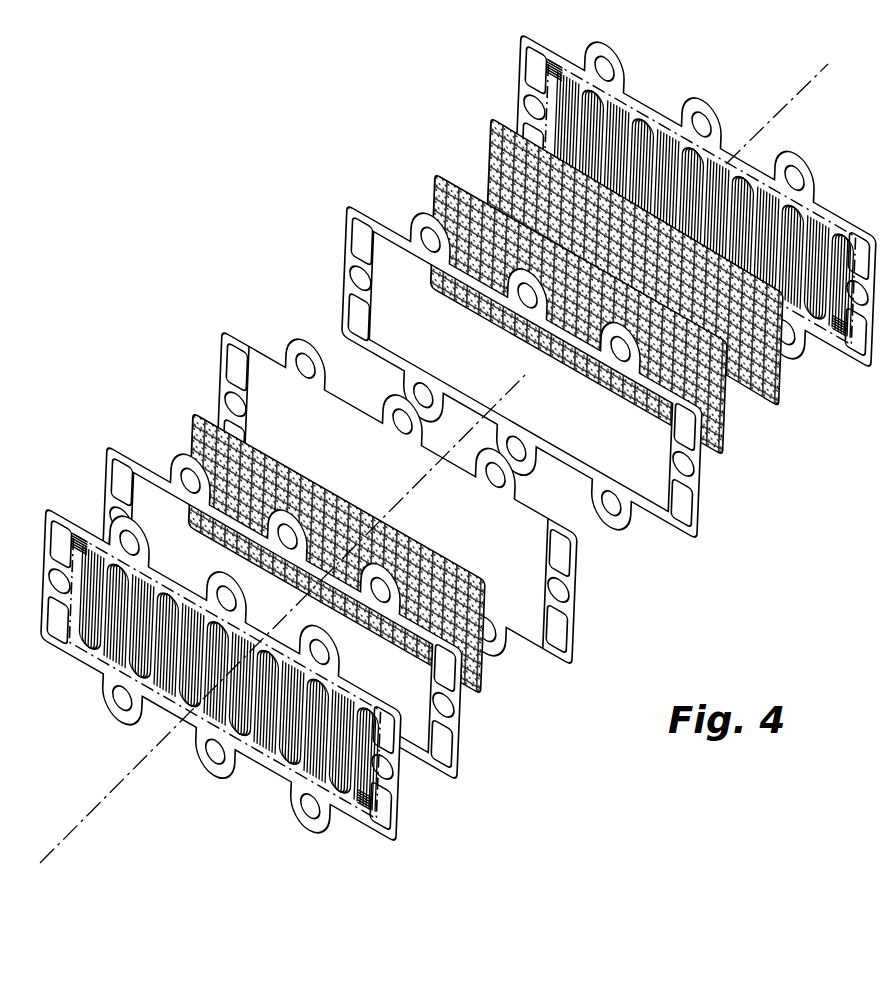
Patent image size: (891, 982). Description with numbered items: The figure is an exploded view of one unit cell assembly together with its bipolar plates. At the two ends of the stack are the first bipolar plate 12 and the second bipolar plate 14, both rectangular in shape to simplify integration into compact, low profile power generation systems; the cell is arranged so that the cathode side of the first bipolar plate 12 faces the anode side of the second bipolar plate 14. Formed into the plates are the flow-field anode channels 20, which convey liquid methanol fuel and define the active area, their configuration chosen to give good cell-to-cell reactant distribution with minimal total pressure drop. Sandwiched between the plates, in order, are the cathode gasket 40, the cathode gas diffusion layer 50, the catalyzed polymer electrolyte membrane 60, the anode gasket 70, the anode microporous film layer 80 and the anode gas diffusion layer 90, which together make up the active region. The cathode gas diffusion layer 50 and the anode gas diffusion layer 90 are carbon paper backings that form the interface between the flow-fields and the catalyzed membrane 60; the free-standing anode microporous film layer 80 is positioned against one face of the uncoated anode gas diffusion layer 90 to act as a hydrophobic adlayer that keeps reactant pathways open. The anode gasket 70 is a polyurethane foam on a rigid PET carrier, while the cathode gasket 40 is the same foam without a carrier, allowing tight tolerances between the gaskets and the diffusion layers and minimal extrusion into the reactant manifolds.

The first bipolar plate 12 is at (400, 835).
The second bipolar plate 14 is at (517, 70).
The flow-field anode channels 20 is at (630, 103).
The cathode gasket 40 is at (456, 784).
The cathode gas diffusion layer 50 is at (477, 702).
The catalyzed polymer electrolyte membrane 60 is at (225, 330).
The anode gasket 70 is at (694, 543).
The anode microporous film layer 80 is at (724, 463).
The anode gas diffusion layer 90 is at (771, 400).